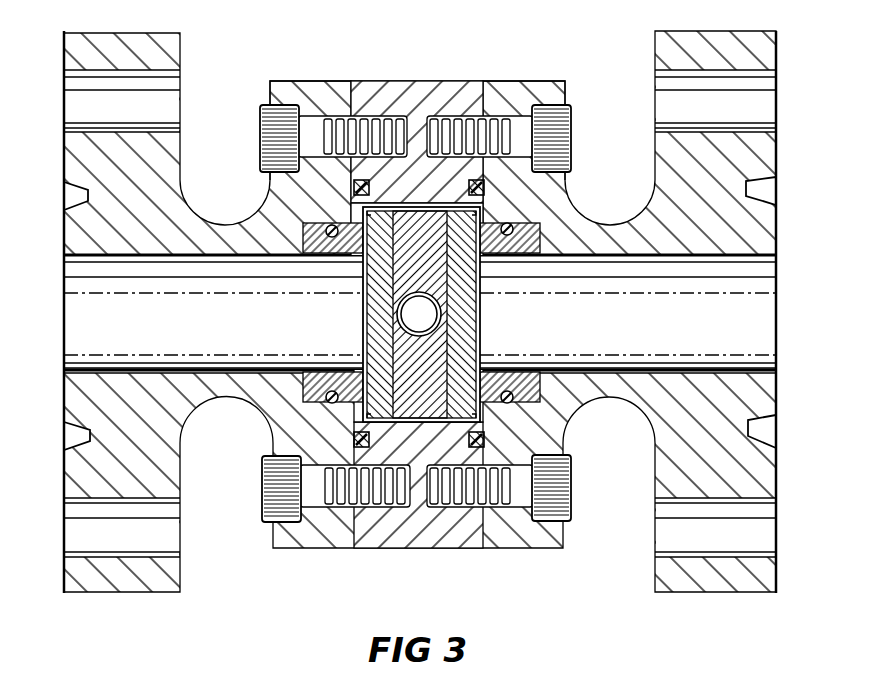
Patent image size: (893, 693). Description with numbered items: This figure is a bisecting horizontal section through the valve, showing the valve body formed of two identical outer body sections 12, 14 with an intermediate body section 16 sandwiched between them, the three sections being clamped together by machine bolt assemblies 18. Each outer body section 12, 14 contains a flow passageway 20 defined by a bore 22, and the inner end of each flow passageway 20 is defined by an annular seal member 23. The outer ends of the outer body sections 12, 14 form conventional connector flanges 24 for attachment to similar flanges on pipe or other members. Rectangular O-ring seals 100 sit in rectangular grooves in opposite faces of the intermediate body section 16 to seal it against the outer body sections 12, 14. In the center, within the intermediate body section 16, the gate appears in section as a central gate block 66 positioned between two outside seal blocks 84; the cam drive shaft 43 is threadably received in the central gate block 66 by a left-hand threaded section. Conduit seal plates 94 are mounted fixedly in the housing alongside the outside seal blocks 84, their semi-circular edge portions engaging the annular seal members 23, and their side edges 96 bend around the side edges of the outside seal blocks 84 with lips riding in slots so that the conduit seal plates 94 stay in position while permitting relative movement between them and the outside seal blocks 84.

The outer body section 12 is at (297, 81).
The outer body section 14 is at (510, 81).
The intermediate body section 16 is at (383, 81).
The machine bolt assemblies 18 is at (573, 135).
The flow passageways 20 is at (100, 328).
The bores 22 is at (66, 270).
The annular seal members 23 is at (343, 248).
The connector flanges 24 is at (98, 33).
The cam drive shaft 43 is at (426, 317).
The central gate block 66 is at (430, 366).
The outside seal blocks 84 is at (460, 270).
The conduit seal plates 94 is at (363, 297).
The side edges 96 is at (483, 203).
The rectangular O-ring seals 100 is at (354, 186).